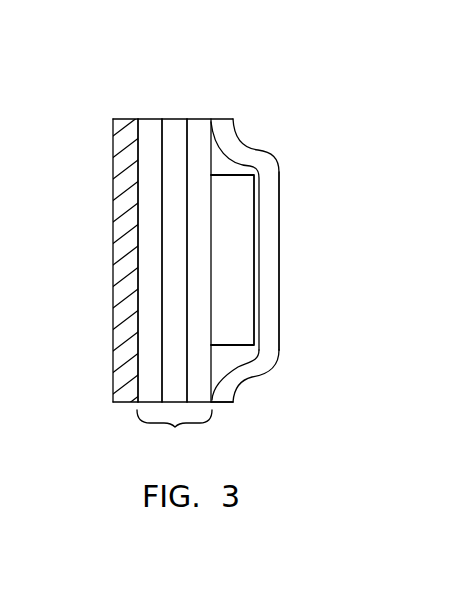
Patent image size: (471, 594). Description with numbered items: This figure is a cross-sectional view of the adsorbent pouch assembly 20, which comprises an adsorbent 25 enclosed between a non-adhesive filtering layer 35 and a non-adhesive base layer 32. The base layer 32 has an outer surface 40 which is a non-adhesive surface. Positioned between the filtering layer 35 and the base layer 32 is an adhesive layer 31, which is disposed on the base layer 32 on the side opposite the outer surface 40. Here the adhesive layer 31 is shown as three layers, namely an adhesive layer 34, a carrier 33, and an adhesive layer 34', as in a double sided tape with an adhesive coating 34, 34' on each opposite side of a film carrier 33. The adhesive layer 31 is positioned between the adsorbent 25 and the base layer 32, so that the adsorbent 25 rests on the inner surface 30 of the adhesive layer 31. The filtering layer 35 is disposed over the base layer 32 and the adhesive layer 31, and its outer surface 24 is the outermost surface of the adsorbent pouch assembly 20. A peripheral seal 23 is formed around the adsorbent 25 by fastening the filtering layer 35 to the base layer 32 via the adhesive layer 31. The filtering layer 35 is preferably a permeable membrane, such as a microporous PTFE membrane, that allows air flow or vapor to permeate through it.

The adsorbent pouch assembly 20 is at (255, 103).
The peripheral seal 23 is at (212, 403).
The outer surface 24 is at (280, 171).
The adsorbent 25 is at (237, 347).
The inner surface 30 is at (212, 162).
The adhesive layer 31 is at (174, 431).
The base layer 32 is at (125, 403).
The carrier 33 is at (179, 118).
The adhesive layer 34 is at (129, 221).
The adhesive layer 34' is at (218, 220).
The filtering layer 35 is at (280, 335).
The outer surface 40 is at (113, 285).